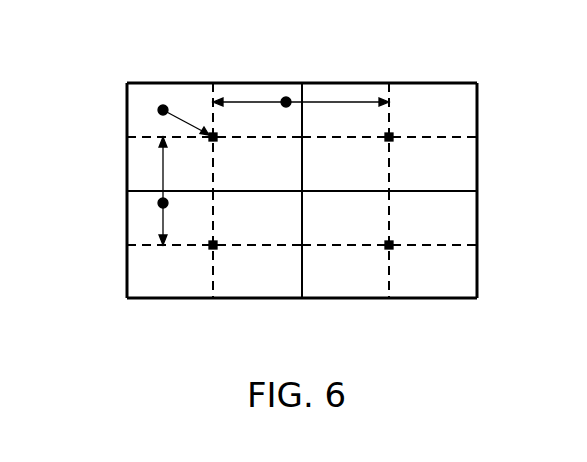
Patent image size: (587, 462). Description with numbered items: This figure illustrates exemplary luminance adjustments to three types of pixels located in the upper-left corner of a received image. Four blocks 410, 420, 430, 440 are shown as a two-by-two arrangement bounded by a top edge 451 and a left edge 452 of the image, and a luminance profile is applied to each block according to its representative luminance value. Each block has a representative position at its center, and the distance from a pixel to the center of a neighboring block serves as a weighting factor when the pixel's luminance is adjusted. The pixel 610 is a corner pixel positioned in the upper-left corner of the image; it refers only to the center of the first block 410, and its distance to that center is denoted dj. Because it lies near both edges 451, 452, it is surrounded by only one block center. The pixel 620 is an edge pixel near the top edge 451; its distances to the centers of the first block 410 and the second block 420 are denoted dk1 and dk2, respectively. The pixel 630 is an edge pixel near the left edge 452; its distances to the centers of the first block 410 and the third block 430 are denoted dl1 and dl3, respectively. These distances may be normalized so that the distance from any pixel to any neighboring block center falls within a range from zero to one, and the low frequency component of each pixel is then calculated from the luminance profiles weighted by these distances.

The edge of the image 451 is at (144, 83).
The edge of the image 452 is at (127, 272).
The block 410 is at (189, 95).
The block 420 is at (432, 95).
The block 430 is at (170, 300).
The block 440 is at (433, 300).
The corner pixel 610 is at (158, 110).
The edge pixel 620 is at (287, 94).
The edge pixel 630 is at (158, 203).
The distance from pixel 610 to center C1 dj is at (200, 129).
The distance from pixel 620 to center C1 dk1 is at (250, 98).
The distance from pixel 620 to center C2 dk2 is at (340, 98).
The distance from pixel 630 to center C1 dl1 is at (162, 170).
The distance from pixel 630 to center C3 dl3 is at (162, 229).